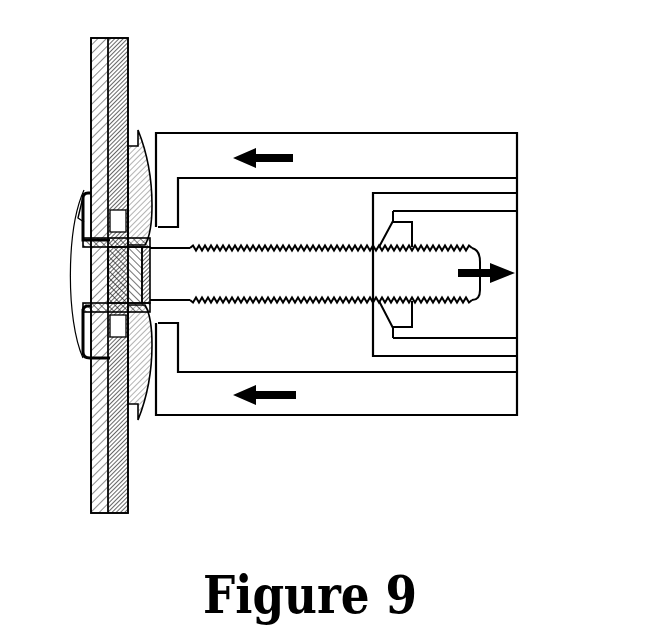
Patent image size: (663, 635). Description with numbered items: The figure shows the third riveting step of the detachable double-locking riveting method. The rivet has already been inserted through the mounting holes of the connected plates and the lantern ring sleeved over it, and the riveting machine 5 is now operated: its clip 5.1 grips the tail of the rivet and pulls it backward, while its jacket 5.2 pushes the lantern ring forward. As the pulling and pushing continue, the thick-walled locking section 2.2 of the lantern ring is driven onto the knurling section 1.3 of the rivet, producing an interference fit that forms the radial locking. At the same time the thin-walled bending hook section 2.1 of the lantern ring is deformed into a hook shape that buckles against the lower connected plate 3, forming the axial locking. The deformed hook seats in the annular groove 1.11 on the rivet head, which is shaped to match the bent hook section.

The lower connected plate 3 is at (91, 493).
The locking section 2.2 is at (137, 136).
The bending hook section 2.1 is at (87, 222).
The annular groove 1.11 is at (82, 197).
The knurling section 1.3 is at (152, 232).
The riveting machine 5 is at (498, 247).
The clip 5.1 is at (443, 347).
The jacket 5.2 is at (330, 395).